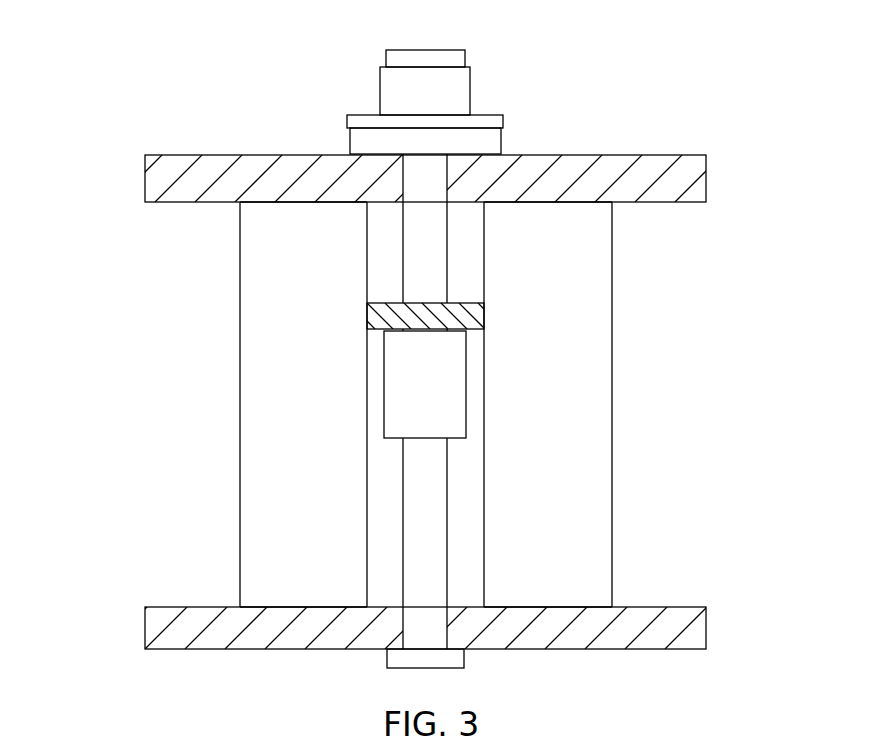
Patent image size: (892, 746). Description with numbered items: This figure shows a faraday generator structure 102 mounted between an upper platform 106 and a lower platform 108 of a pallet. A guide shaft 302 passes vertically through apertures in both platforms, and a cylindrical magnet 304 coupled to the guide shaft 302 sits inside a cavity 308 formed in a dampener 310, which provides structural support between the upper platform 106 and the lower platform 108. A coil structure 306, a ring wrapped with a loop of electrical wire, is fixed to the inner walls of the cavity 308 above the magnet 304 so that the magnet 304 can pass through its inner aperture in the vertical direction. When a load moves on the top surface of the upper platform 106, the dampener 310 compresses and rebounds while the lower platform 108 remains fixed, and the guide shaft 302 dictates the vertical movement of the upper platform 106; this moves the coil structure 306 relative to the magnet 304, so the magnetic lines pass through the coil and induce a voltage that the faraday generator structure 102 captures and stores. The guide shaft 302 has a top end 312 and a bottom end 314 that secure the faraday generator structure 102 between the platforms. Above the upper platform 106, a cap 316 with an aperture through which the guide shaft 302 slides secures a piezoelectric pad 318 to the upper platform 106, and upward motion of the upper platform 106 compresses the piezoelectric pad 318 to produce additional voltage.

The faraday generator structure 102 is at (178, 57).
The upper platform 106 is at (145, 172).
The lower platform 108 is at (145, 627).
The guide shaft 302 is at (393, 489).
The magnet 304 is at (467, 403).
The coil structure 306 is at (495, 314).
The cavity 308 is at (367, 264).
The dampener 310 is at (240, 396).
The top end 312 is at (417, 50).
The bottom end 314 is at (453, 668).
The cap 316 is at (470, 90).
The piezoelectric pad 318 is at (503, 143).